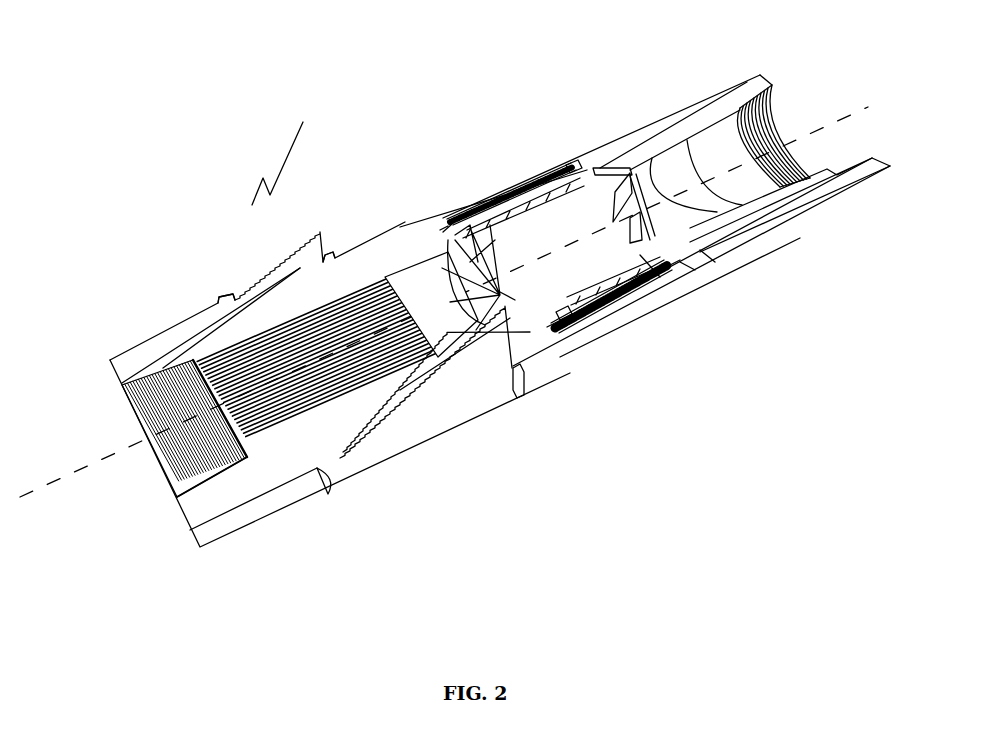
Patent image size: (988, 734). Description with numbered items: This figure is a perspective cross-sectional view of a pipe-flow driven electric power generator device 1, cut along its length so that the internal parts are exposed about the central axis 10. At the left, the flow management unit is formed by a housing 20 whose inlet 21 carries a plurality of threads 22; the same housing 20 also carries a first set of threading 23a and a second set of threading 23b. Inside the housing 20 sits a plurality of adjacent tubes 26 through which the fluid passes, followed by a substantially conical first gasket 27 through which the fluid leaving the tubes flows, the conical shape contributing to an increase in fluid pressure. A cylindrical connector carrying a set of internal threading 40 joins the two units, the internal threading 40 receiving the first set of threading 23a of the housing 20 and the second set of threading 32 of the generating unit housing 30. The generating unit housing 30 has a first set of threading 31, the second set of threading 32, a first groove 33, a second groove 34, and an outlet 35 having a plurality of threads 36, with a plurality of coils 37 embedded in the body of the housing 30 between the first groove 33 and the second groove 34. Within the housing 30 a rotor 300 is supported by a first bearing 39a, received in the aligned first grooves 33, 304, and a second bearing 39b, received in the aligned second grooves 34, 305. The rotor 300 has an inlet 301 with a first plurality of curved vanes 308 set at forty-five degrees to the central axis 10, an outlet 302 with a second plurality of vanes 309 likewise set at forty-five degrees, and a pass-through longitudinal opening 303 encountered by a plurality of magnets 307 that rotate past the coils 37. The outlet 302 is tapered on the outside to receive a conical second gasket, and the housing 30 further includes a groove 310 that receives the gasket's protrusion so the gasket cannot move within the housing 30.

The pipe-flow driven electric power generator device 1 is at (284, 153).
The central axis 10 is at (85, 465).
The housing 20 is at (263, 480).
The inlet 21 is at (170, 487).
The threads 22 is at (143, 418).
The first set of threading 23a is at (347, 470).
The second set of threading 23b is at (430, 403).
The adjacent tubes 26 is at (327, 385).
The first gasket 27 is at (450, 318).
The housing 30 is at (450, 215).
The first set of threading 31 is at (350, 263).
The second set of threading 32 is at (356, 262).
The first groove 33 is at (453, 223).
The second groove 34 is at (705, 258).
The outlet 35 is at (733, 100).
The threads 36 is at (807, 167).
The coils 37 is at (660, 265).
The first bearing 39a is at (560, 317).
The second bearing 39b is at (573, 163).
The internal threading 40 is at (517, 372).
The rotor 300 is at (613, 290).
The inlet 301 is at (507, 297).
The outlet 302 is at (643, 205).
The pass-through longitudinal opening 303 is at (592, 258).
The first groove 304 is at (467, 183).
The second groove 305 is at (687, 263).
The magnets 307 is at (513, 187).
The first plurality of vanes 308 is at (473, 300).
The second plurality of vanes 309 is at (630, 175).
The groove 310 is at (610, 168).